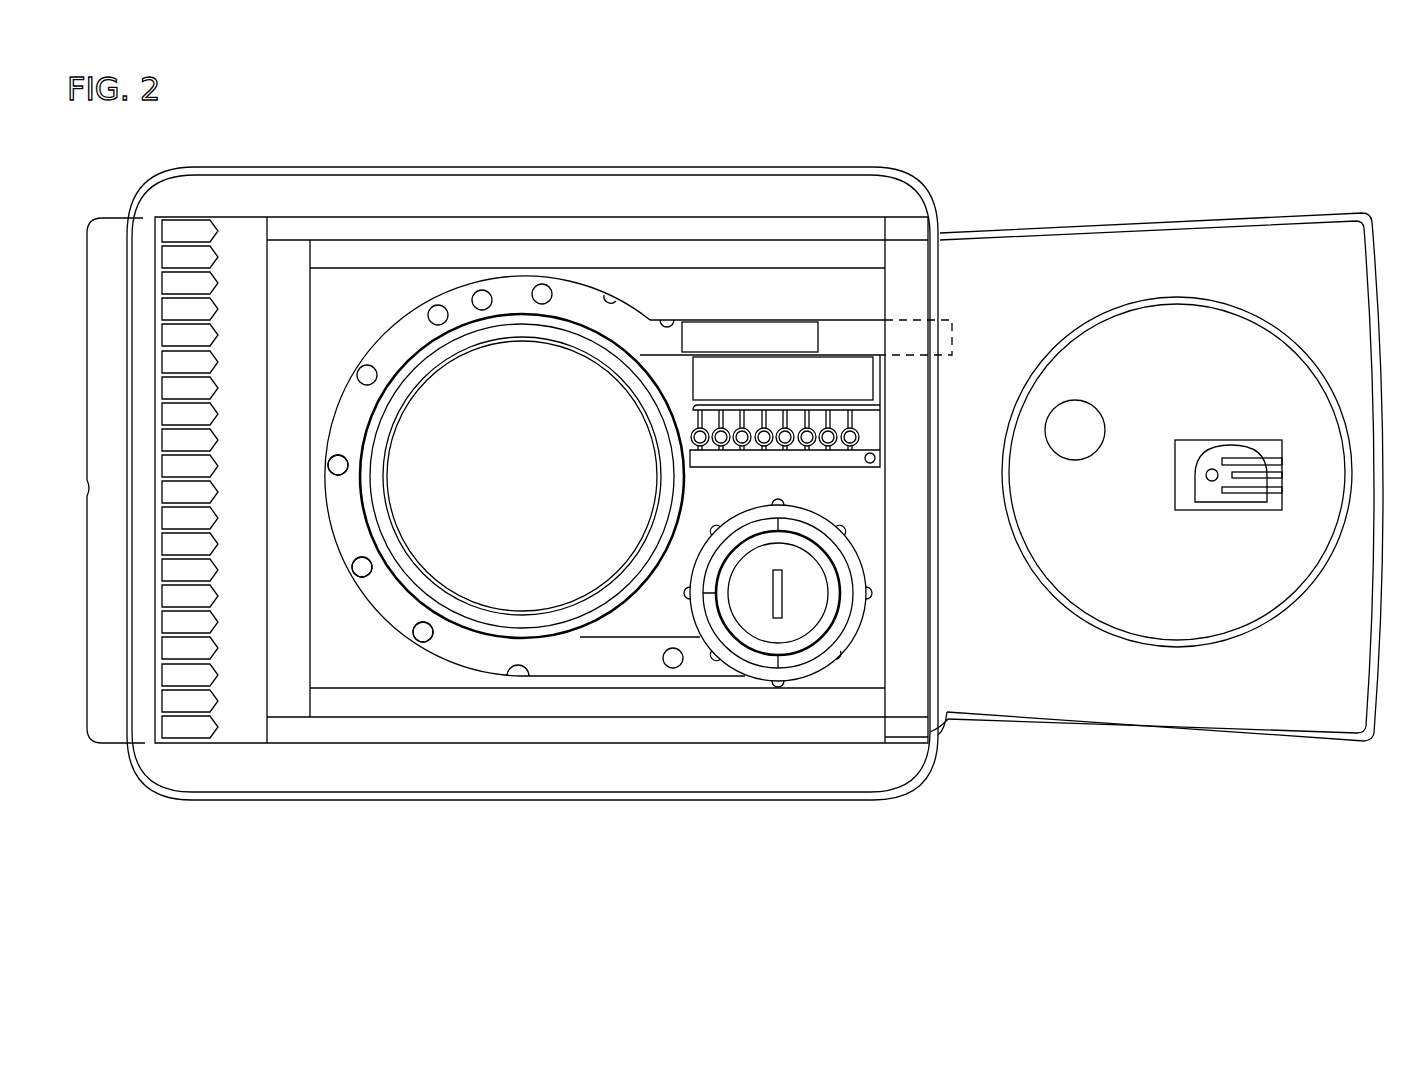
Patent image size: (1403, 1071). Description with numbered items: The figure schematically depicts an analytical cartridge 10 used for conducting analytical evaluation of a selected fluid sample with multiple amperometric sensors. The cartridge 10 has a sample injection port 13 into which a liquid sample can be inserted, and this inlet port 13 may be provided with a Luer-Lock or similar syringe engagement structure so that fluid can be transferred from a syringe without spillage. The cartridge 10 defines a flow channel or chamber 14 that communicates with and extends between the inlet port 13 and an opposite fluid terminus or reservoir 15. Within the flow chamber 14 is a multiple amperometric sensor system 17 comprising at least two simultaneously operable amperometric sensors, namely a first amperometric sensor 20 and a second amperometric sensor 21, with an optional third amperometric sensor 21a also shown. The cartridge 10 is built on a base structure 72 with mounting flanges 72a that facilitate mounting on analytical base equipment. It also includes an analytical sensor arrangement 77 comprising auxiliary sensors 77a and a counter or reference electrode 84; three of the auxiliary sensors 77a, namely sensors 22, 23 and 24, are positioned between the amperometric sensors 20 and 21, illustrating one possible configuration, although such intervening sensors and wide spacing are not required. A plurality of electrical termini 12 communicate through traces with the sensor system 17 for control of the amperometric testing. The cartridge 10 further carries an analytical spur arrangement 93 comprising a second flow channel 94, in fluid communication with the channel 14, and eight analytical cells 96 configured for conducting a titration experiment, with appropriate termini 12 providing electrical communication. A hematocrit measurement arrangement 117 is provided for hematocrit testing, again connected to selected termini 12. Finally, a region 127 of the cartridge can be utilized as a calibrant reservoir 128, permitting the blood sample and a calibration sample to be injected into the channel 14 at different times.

The analytical cartridge 10 is at (867, 118).
The electrical termini 12 is at (85, 490).
The sample injection port 13 is at (810, 573).
The flow channel 14 is at (613, 303).
The fluid terminus or reservoir 15 is at (1195, 323).
The multiple amperometric sensor system 17 is at (333, 391).
The first amperometric sensor 20 is at (678, 666).
The second amperometric sensor 21 is at (476, 292).
The third amperometric sensor 21a is at (365, 366).
The auxiliary sensor 22 is at (414, 637).
The auxiliary sensor 23 is at (357, 577).
The auxiliary sensor 24 is at (329, 463).
The base structure 72 is at (455, 167).
The mounting flanges 72a is at (587, 168).
The analytical sensor arrangement 77 is at (332, 652).
The auxiliary sensors 77a is at (430, 310).
The counter or reference electrode 84 is at (546, 286).
The analytical spur arrangement 93 is at (786, 398).
The second flow channel 94 is at (876, 388).
The analytical cells 96 is at (880, 436).
The hematocrit measurement arrangement 117 is at (762, 302).
The region 127 is at (518, 485).
The calibrant reservoir 128 is at (538, 547).